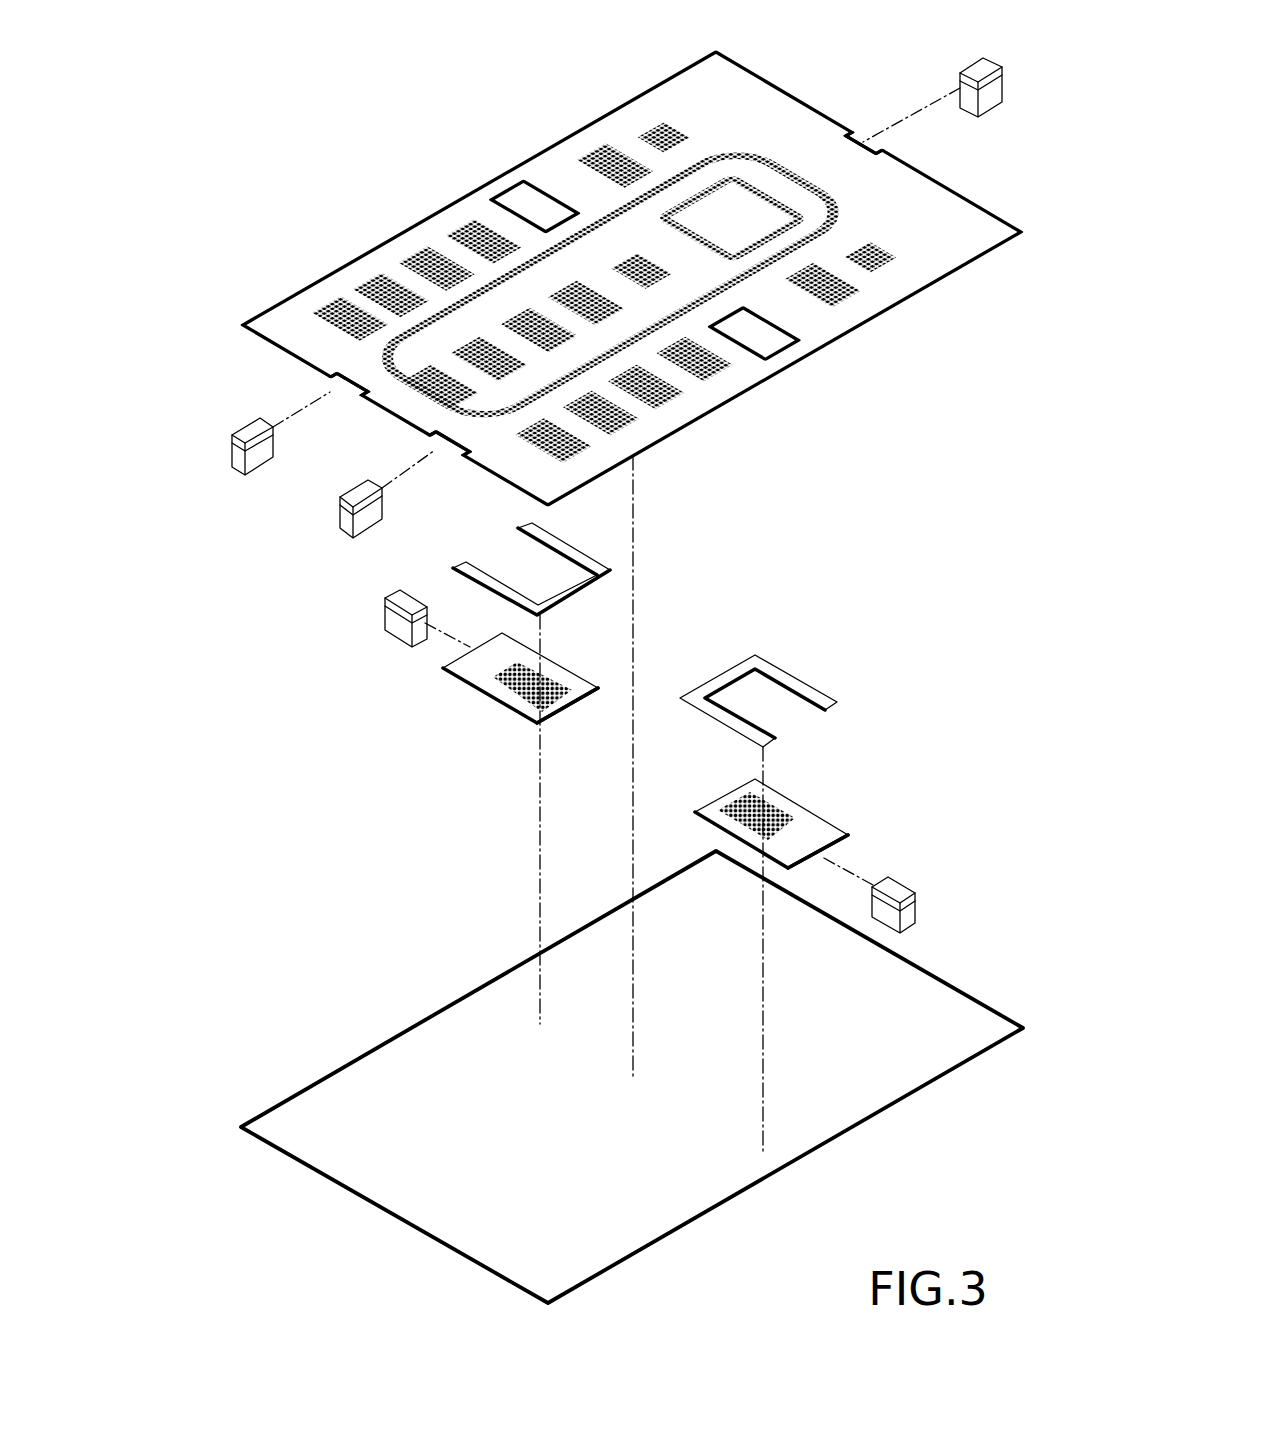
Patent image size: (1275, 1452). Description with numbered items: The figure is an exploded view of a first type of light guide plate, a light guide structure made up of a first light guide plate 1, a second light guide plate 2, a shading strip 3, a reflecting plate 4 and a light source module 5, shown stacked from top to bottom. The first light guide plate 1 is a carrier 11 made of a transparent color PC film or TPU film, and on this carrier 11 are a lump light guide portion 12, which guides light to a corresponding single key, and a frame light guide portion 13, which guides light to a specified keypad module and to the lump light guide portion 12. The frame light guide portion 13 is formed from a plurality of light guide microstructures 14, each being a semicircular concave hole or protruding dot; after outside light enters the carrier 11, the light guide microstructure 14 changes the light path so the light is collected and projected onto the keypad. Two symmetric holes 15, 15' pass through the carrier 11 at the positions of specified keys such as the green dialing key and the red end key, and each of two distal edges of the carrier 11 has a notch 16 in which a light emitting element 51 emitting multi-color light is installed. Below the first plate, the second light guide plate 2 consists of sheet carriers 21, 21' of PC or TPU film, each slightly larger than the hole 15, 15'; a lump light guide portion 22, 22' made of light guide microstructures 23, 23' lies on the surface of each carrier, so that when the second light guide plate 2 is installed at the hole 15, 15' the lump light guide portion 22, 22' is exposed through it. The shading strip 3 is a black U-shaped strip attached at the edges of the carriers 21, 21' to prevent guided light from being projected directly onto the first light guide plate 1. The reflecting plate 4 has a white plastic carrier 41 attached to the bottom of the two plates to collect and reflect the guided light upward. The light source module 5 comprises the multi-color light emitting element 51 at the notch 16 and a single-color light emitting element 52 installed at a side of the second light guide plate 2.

The first light guide plate 1 is at (963, 193).
The carrier 11 is at (890, 188).
The lump light guide portion 12 is at (866, 282).
The frame light guide portion 13 is at (759, 145).
The light guide microstructure 14 is at (836, 294).
The hole 15 is at (494, 179).
The hole 15' is at (779, 365).
The notch 16 is at (863, 143).
The second light guide plate 2 is at (849, 786).
The carrier 21 is at (496, 710).
The carrier 21' is at (816, 823).
The lump light guide portion 22 is at (512, 724).
The lump light guide portion 22' is at (719, 788).
The light guide microstructure 23 is at (568, 732).
The light guide microstructure 23' is at (820, 806).
The shading strip 3 is at (558, 552).
The reflecting plate 4 is at (918, 1094).
The carrier 41 is at (943, 981).
The light source module 5 is at (242, 412).
The light emitting element 51 is at (993, 92).
The light emitting element 52 is at (402, 632).